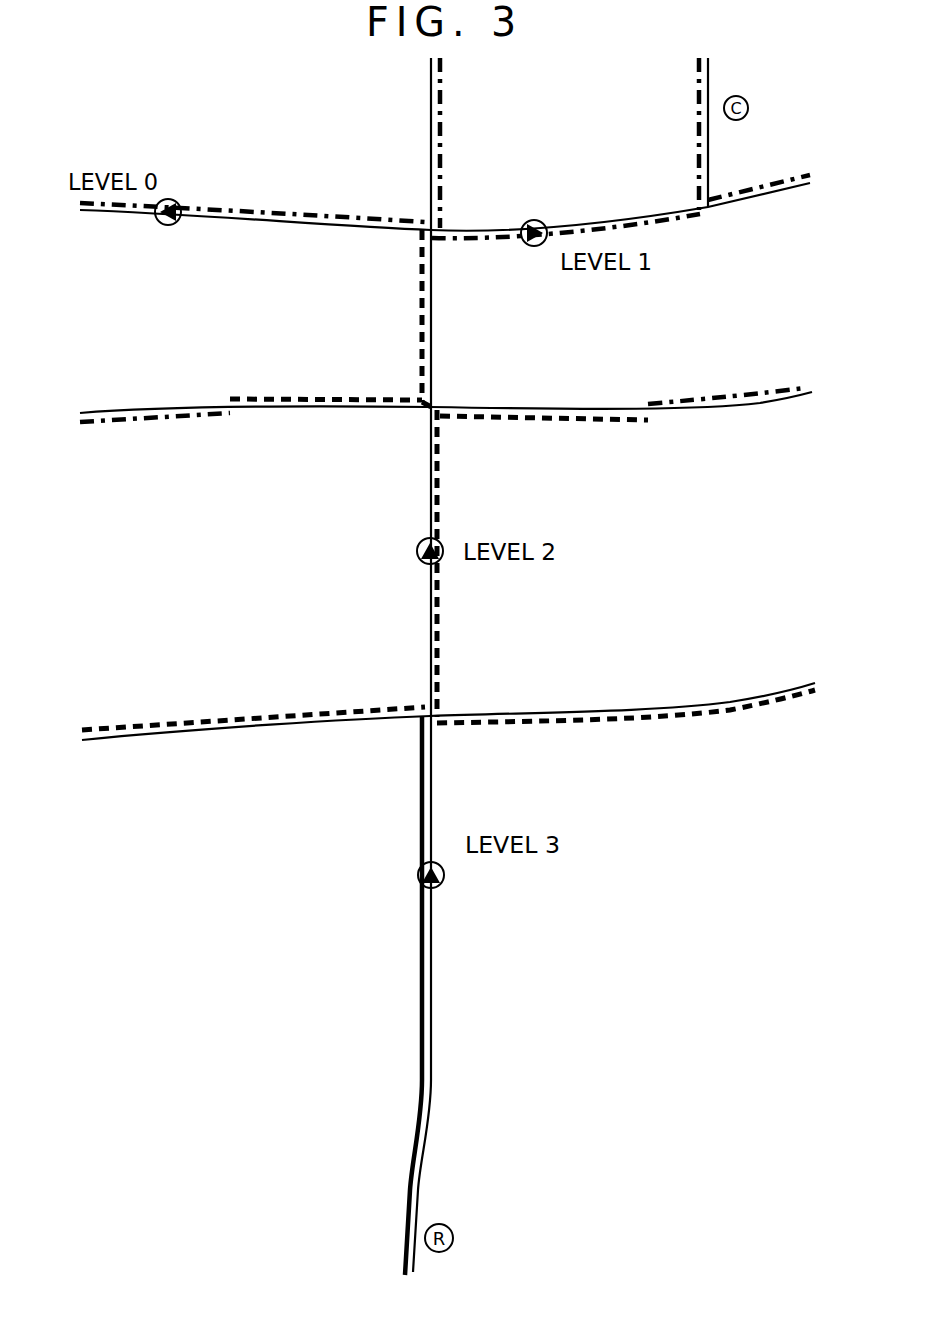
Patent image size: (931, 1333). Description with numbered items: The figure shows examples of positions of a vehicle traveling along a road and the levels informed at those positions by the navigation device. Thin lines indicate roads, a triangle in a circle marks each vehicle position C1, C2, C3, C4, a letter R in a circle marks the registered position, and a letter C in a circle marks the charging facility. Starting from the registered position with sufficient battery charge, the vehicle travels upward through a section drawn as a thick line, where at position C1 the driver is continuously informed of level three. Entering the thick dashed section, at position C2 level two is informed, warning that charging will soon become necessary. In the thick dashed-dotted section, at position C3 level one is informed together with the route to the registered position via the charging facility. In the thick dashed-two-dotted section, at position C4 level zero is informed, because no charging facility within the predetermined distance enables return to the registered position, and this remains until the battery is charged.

The position of the vehicle C1 is at (440, 886).
The position of the vehicle C2 is at (421, 561).
The position of the vehicle C3 is at (540, 246).
The position of the vehicle C4 is at (173, 225).